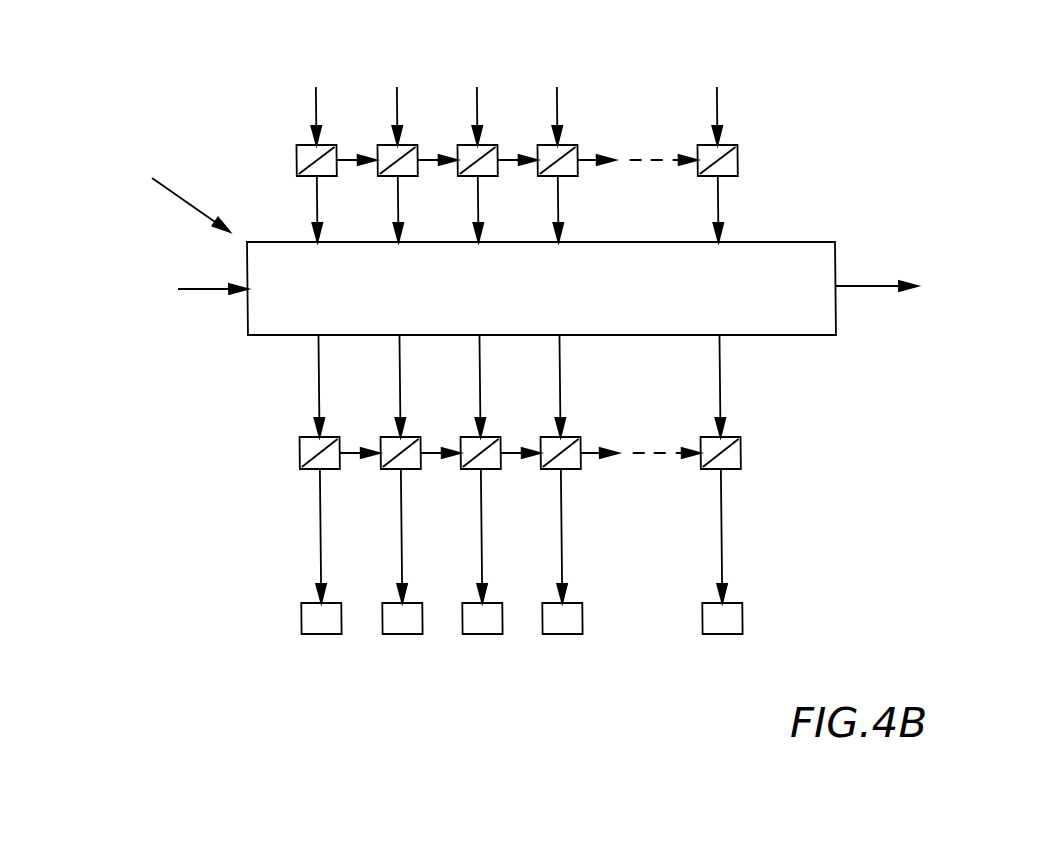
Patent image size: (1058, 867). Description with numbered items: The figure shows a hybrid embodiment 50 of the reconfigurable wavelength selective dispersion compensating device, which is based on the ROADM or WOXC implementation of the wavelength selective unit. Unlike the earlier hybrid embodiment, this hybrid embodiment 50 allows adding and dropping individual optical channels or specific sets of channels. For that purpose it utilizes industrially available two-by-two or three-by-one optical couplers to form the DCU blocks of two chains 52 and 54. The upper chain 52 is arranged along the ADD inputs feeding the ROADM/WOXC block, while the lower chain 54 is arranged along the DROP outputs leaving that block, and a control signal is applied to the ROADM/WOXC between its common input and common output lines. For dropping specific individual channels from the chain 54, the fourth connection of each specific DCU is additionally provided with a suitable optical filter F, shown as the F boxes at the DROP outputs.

The hybrid embodiment 50 is at (262, 62).
The chain 52 is at (278, 160).
The chain 54 is at (282, 453).